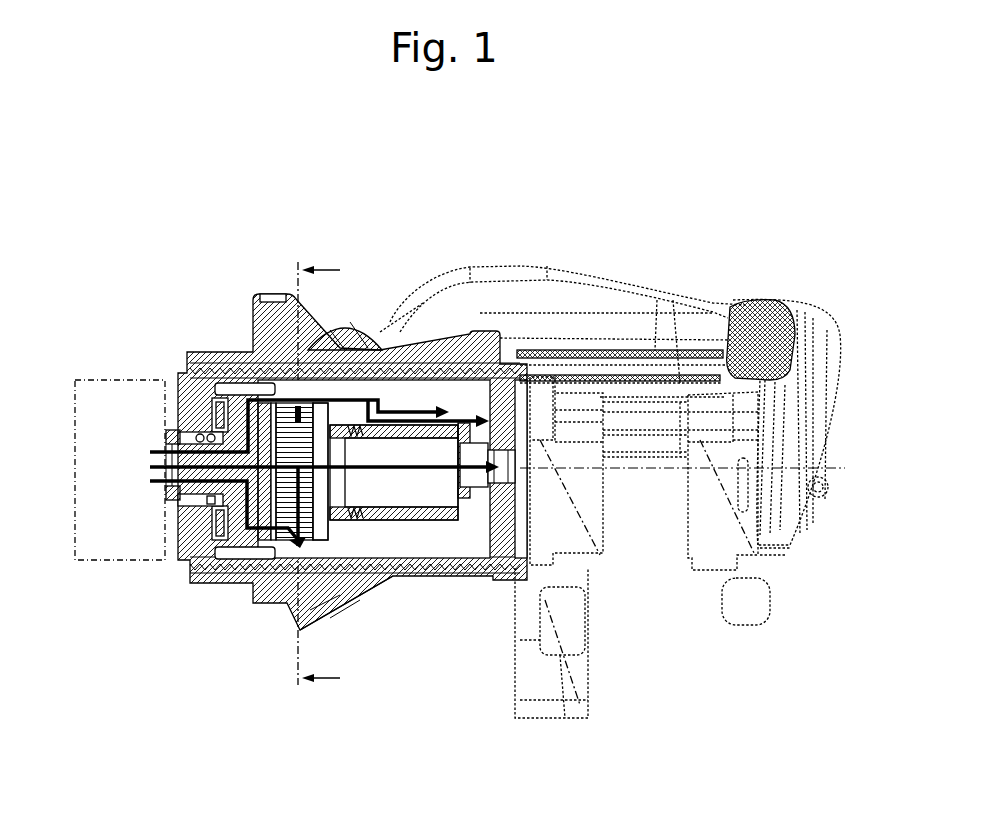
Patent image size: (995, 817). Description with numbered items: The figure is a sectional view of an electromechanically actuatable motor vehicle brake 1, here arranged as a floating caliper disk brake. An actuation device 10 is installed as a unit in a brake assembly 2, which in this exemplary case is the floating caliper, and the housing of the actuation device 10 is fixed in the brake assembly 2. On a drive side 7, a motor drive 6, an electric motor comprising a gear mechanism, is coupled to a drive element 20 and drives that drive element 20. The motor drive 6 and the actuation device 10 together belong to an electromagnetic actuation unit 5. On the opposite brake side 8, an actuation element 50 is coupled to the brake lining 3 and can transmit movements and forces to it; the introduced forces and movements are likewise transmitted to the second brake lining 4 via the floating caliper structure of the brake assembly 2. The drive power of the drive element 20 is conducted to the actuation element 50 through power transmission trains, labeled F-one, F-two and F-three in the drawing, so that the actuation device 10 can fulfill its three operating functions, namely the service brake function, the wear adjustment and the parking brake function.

The electromechanical actuator / brake assembly 1 is at (447, 447).
The brake assembly 2 is at (537, 299).
The brake lining 3 is at (585, 492).
The brake lining 4 is at (707, 523).
The electromagnetic actuation unit 5 is at (196, 262).
The motor drive 6 is at (110, 503).
The drive side 7 is at (150, 341).
The brake side 8 is at (722, 644).
The actuation device 10 is at (383, 650).
The drive element 20 is at (233, 532).
The actuation element 50 is at (500, 536).